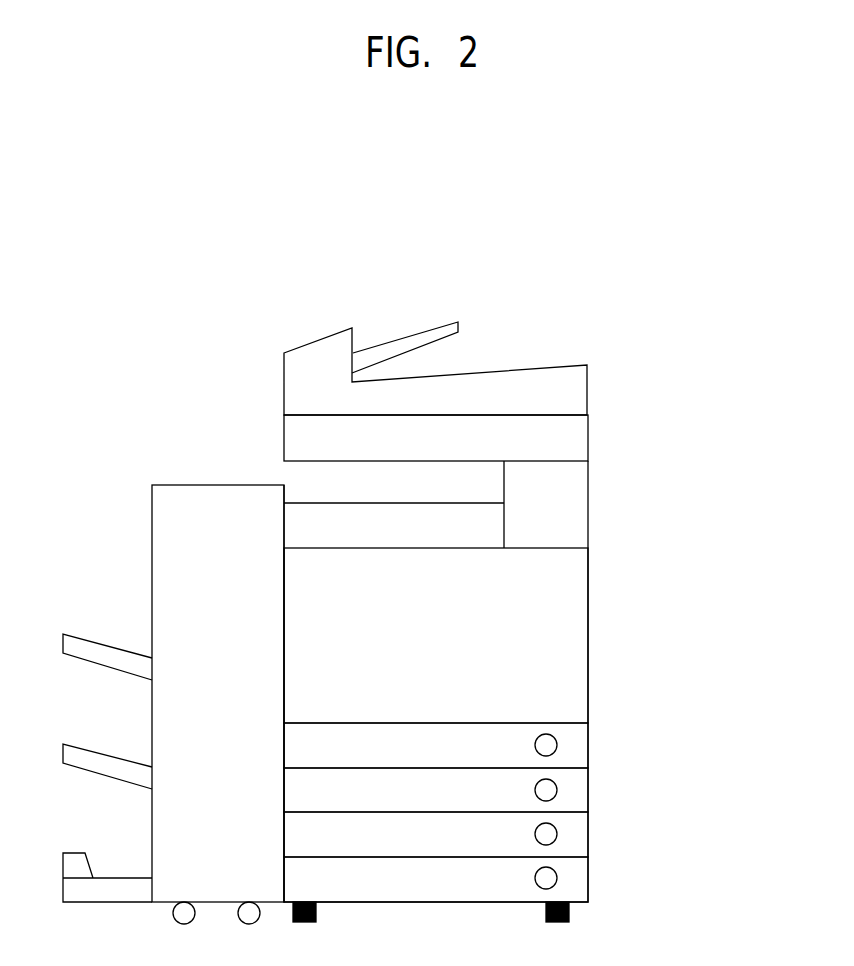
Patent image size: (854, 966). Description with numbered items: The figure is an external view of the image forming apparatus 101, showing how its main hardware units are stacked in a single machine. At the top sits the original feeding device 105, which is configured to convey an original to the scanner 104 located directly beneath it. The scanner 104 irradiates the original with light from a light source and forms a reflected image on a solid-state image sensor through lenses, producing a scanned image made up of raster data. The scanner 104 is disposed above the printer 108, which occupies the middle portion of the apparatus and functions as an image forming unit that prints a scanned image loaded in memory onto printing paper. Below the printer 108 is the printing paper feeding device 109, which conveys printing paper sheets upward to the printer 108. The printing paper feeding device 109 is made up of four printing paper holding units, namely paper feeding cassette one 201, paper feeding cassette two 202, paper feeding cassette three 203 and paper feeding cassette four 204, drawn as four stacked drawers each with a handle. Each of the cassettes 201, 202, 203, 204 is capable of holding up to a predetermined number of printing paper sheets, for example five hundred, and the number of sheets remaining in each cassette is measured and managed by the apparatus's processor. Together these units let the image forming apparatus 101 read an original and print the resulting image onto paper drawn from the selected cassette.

The image forming apparatus 101 is at (528, 323).
The scanner 104 is at (647, 419).
The original feeding device 105 is at (647, 332).
The printer 108 is at (720, 562).
The printing paper feeding device 109 is at (720, 737).
The paper feeding cassette 1 201 is at (590, 754).
The paper feeding cassette 2 202 is at (590, 797).
The paper feeding cassette 3 203 is at (590, 838).
The paper feeding cassette 4 204 is at (590, 882).